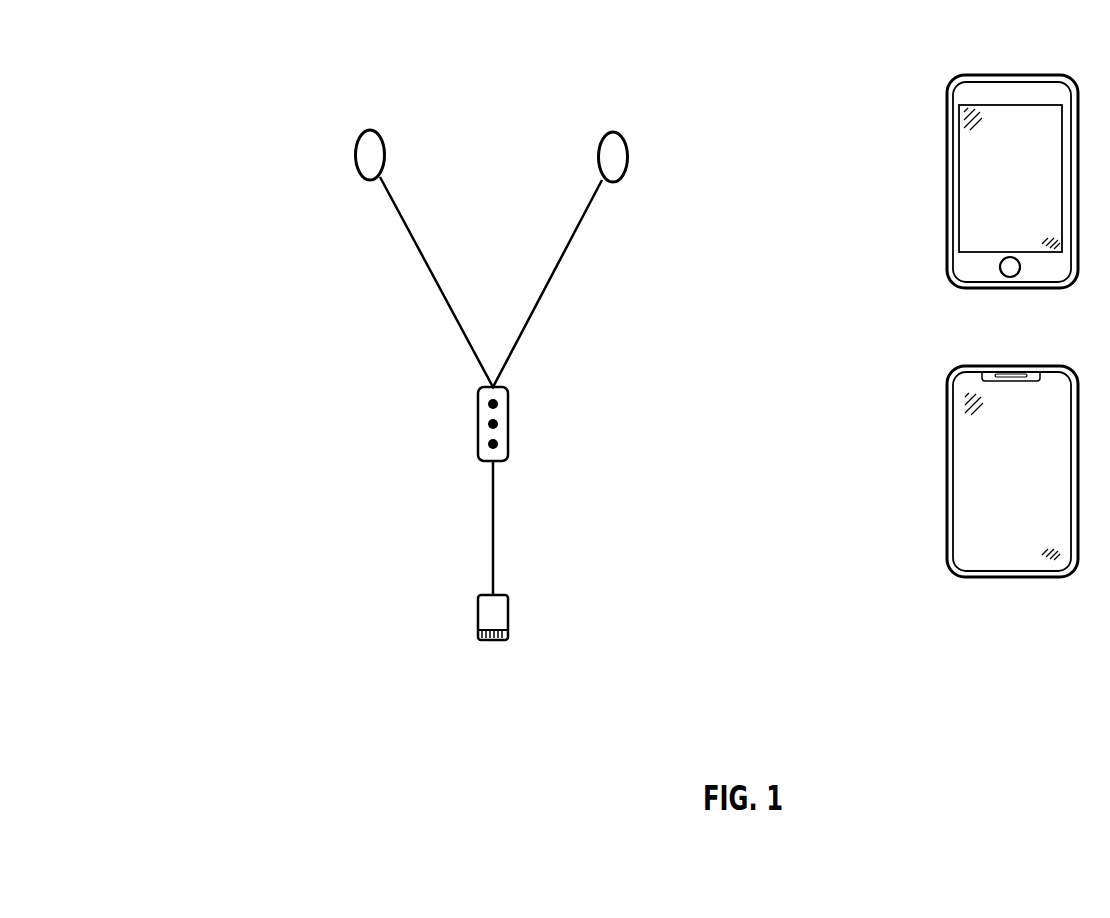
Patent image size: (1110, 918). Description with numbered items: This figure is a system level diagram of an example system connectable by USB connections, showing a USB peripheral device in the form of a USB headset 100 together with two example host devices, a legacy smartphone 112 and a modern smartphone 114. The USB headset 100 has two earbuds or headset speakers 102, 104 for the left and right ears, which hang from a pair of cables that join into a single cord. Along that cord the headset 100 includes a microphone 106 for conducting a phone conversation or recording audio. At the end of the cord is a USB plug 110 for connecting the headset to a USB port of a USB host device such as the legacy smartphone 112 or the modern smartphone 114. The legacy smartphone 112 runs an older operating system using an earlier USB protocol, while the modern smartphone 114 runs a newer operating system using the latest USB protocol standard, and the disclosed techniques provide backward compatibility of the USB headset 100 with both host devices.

The USB headset 100 is at (228, 102).
The earbud or headset speaker 102 is at (376, 130).
The earbud or headset speaker 104 is at (618, 132).
The microphone 106 is at (478, 415).
The USB plug 110 is at (478, 600).
The legacy smartphone 112 is at (932, 152).
The modern smartphone 114 is at (926, 474).